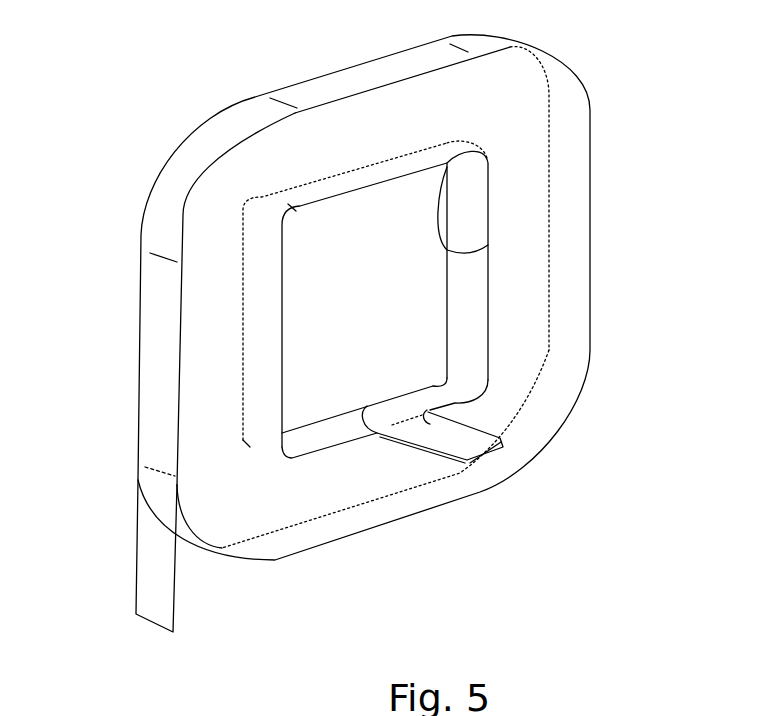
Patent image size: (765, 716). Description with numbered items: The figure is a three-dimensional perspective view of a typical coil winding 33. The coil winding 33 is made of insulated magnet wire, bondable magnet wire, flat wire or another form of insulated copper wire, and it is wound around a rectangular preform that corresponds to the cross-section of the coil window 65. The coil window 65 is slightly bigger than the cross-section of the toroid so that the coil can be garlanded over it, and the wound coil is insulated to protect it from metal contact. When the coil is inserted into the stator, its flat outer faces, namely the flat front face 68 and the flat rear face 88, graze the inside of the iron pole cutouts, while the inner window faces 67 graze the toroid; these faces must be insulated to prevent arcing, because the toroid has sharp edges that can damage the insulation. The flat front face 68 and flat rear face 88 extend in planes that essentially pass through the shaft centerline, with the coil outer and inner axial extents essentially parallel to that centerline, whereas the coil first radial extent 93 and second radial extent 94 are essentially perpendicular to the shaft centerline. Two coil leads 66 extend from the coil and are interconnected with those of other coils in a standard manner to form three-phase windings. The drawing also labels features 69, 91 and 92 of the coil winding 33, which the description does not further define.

The coil winding 33 is at (171, 62).
The coil window 65 is at (418, 328).
The coil leads 66 is at (155, 597).
The inner window faces 67 is at (475, 275).
The flat front face 68 is at (560, 82).
The foot 69 is at (483, 437).
The flat rear face 88 is at (488, 245).
The top wall 91 is at (343, 113).
The bottom wall 92 is at (347, 523).
The first radial extent 93 is at (215, 328).
The second radial extent 94 is at (549, 308).